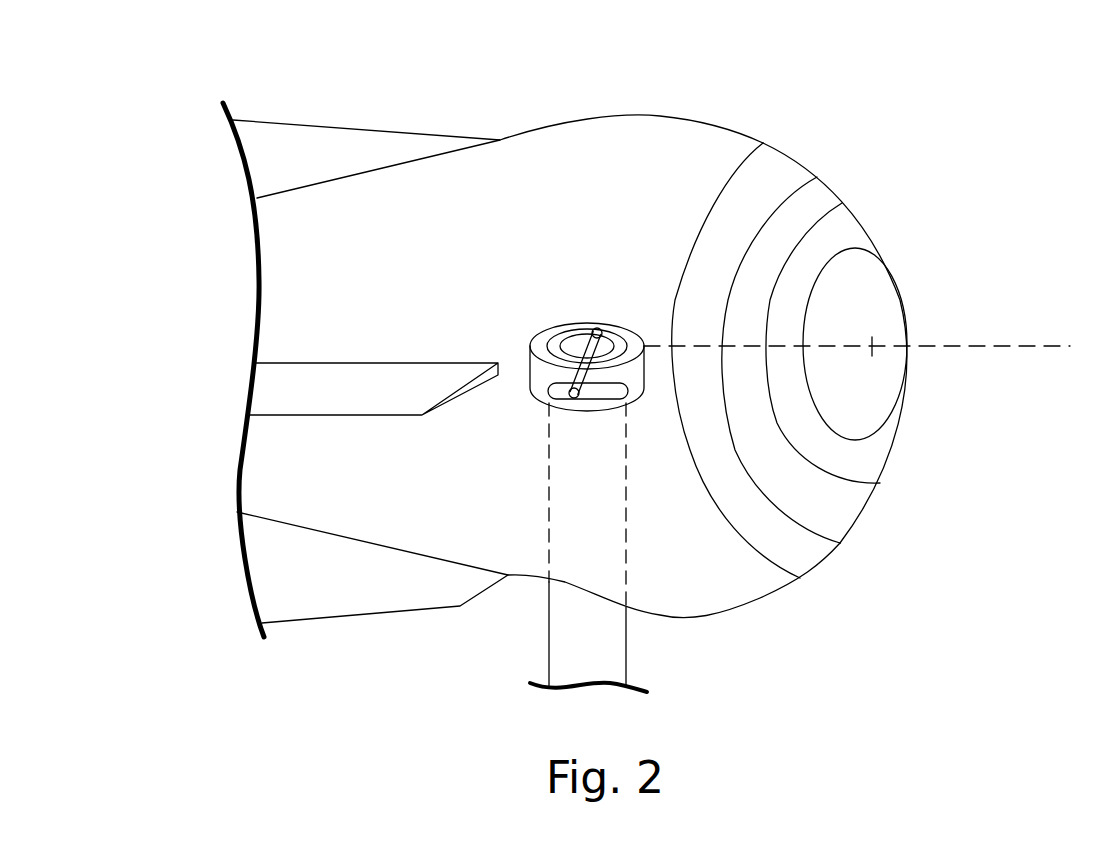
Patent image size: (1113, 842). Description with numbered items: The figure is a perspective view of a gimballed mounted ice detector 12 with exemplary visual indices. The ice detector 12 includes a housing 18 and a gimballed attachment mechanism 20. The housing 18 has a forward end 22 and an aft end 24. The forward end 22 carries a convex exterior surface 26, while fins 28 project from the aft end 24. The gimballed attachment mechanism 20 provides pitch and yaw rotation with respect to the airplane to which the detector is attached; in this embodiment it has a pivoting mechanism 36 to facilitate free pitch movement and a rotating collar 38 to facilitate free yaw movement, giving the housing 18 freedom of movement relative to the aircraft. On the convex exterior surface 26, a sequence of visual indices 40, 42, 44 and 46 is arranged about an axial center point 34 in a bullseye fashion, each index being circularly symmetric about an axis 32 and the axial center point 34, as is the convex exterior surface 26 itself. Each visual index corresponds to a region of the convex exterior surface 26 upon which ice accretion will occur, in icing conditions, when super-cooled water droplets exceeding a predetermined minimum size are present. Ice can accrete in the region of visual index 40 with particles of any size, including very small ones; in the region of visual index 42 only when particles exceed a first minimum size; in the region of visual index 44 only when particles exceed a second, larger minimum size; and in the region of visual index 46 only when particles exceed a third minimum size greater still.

The ice detector 12 is at (866, 106).
The housing 18 is at (628, 145).
The gimballed attachment mechanism 20 is at (578, 645).
The forward end 22 is at (978, 394).
The aft end 24 is at (214, 300).
The convex exterior surface 26 is at (842, 568).
The fins 28 is at (345, 148).
The axis 32 is at (1015, 345).
The axial center point 34 is at (875, 340).
The pivoting mechanism 36 is at (580, 343).
The rotating collar 38 is at (526, 414).
The visual index 40 is at (882, 400).
The visual index 42 is at (872, 455).
The visual index 44 is at (805, 197).
The visual index 46 is at (755, 175).